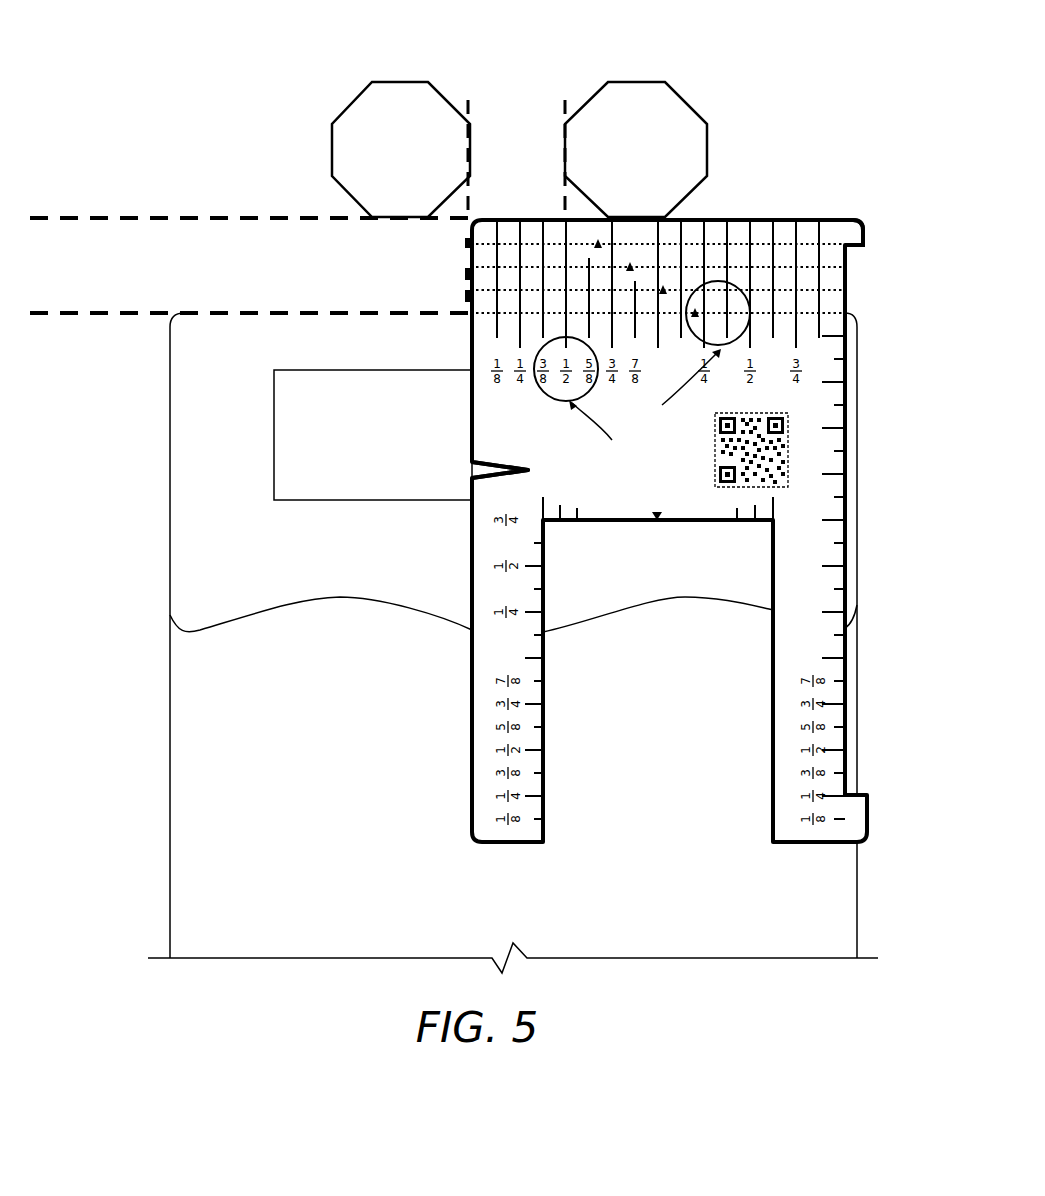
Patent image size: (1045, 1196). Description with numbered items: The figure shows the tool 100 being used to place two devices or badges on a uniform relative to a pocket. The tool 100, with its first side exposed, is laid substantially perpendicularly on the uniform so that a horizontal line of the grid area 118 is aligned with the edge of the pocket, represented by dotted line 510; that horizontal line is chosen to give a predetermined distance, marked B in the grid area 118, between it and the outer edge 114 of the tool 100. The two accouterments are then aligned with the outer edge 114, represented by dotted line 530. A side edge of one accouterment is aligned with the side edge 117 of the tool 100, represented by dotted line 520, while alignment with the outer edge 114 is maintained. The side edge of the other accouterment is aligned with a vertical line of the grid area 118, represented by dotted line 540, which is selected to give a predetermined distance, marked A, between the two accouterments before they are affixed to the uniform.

The tool 100 is at (524, 842).
The outer edge 114 is at (846, 230).
The side edge 117 is at (472, 443).
The grid area 118 is at (460, 270).
The dotted line representing the edge of the pocket 510 is at (133, 312).
The dotted line representing the side edge of the tool 520 is at (468, 100).
The dotted line representing the outer edge of the tool 530 is at (133, 217).
The dotted line representing a vertical line of the grid area 540 is at (565, 100).